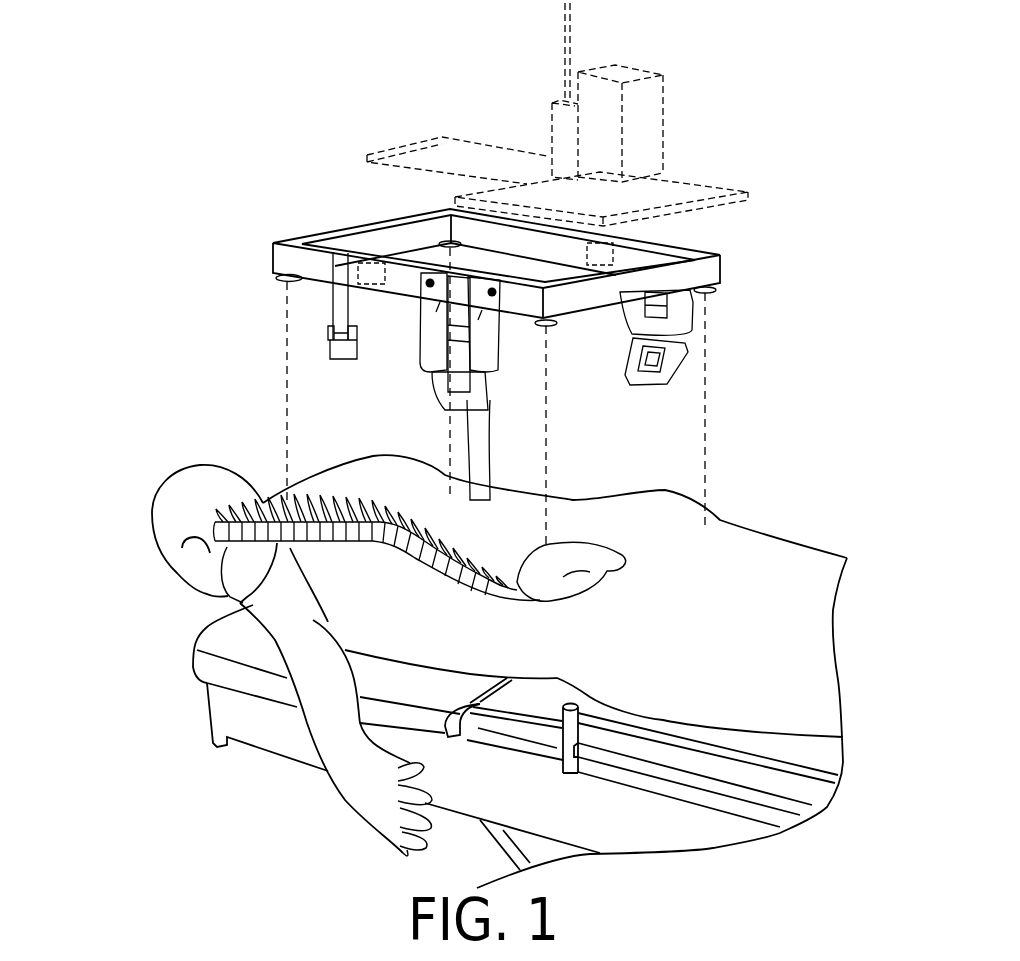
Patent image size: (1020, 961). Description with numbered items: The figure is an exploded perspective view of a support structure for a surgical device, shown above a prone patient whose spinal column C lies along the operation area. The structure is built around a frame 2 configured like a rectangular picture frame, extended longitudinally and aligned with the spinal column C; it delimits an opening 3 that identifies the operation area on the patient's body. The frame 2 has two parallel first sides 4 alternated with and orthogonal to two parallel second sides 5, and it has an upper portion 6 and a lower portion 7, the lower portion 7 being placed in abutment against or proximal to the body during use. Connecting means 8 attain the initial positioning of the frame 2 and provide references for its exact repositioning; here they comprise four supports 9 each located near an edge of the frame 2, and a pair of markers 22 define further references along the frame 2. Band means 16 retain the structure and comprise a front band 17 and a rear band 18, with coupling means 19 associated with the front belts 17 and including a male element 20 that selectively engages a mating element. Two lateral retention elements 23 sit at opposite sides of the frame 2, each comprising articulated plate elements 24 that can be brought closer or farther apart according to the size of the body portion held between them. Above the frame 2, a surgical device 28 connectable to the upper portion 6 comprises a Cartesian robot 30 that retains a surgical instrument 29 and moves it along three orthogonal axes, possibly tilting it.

The frame 2 is at (697, 255).
The opening 3 is at (485, 257).
The first sides 4 is at (307, 273).
The second sides 5 is at (346, 250).
The upper portion 6 is at (263, 219).
The lower portion 7 is at (256, 281).
The connecting means 8 is at (238, 289).
The supports 9 is at (548, 326).
The band means 16 is at (290, 214).
The front band 17 is at (333, 297).
The rear band 18 is at (484, 462).
The coupling means 19 is at (334, 371).
The male element 20 is at (330, 355).
The markers 22 is at (343, 250).
The lateral retention element 23 is at (407, 384).
The plate elements 24 is at (488, 355).
The surgical device 28 is at (668, 100).
The surgical instrument 29 is at (580, 46).
The Cartesian robot 30 is at (545, 137).
The spinal column C is at (240, 598).